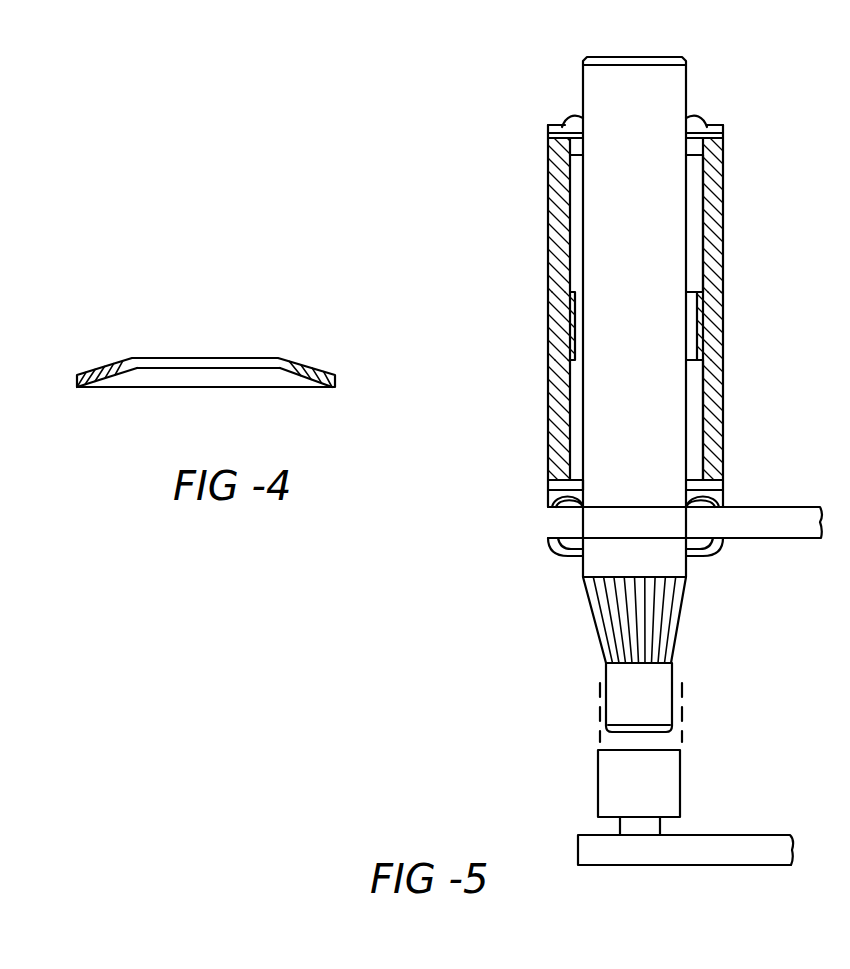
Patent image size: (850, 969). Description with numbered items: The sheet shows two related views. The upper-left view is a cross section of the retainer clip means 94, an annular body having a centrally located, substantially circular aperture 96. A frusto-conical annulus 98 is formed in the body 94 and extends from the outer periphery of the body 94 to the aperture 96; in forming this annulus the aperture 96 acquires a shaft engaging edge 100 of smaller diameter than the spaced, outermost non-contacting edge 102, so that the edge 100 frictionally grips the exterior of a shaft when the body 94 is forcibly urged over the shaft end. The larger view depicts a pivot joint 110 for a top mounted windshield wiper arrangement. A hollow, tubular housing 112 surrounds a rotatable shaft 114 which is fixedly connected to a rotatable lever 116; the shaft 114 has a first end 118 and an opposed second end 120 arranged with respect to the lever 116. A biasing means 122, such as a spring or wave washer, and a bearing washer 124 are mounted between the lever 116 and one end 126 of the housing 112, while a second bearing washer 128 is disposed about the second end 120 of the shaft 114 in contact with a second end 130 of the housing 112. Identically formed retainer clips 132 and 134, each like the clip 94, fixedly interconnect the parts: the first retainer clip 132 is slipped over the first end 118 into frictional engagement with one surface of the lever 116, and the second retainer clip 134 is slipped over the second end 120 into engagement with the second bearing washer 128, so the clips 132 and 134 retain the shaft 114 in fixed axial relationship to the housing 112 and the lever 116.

In FIG. 4, the retainer clip means 94 is at (88, 343).
In FIG. 4, the aperture 96 is at (264, 357).
In FIG. 4, the frusto-conical annulus 98 is at (299, 367).
In FIG. 4, the shaft engaging edge 100 is at (137, 389).
In FIG. 4, the outermost non-contacting edge 102 is at (130, 357).
In FIG. 5, the pivot joint 110 is at (497, 215).
In FIG. 5, the housing 112 is at (718, 334).
In FIG. 5, the rotatable shaft 114 is at (665, 106).
In FIG. 5, the rotatable lever 116 is at (772, 533).
In FIG. 5, the first end 118 is at (613, 707).
In FIG. 5, the second end 120 is at (632, 62).
In FIG. 5, the biasing means 122 is at (552, 505).
In FIG. 5, the bearing washer 124 is at (717, 485).
In FIG. 5, the one end of the housing 126 is at (568, 487).
In FIG. 5, the second bearing washer 128 is at (723, 131).
In FIG. 5, the second end of the housing 130 is at (712, 150).
In FIG. 5, the first retainer clip 132 is at (553, 552).
In FIG. 5, the second retainer clip 134 is at (708, 121).